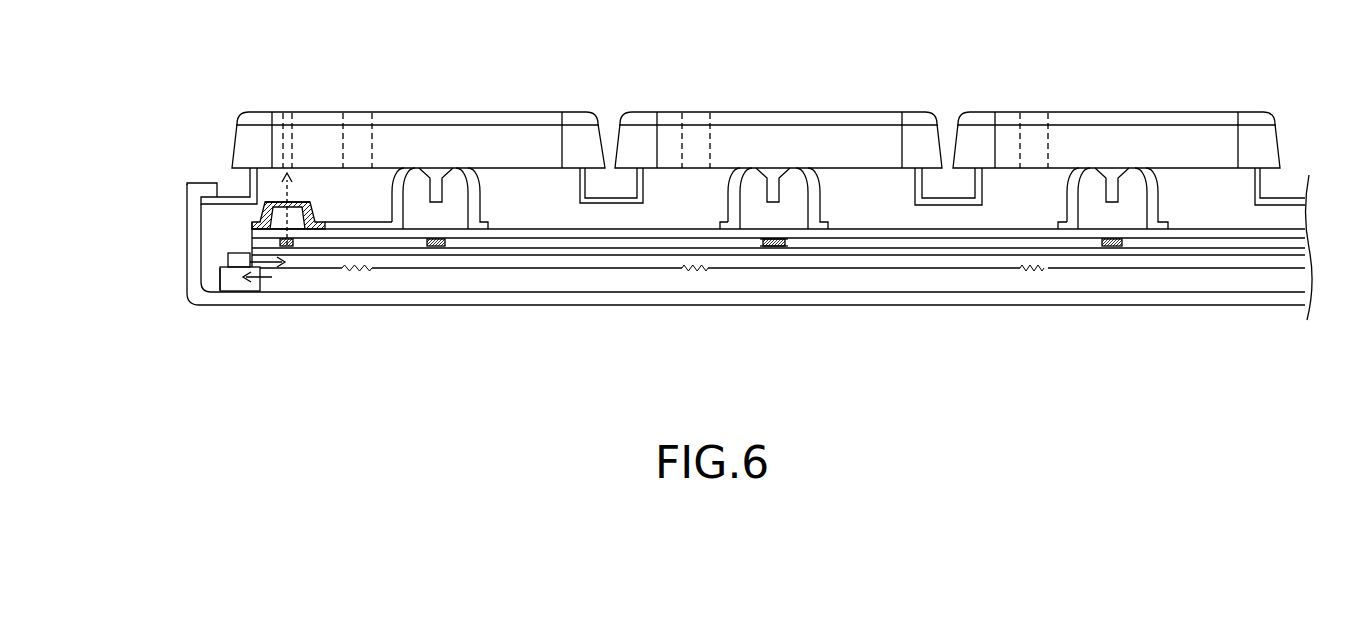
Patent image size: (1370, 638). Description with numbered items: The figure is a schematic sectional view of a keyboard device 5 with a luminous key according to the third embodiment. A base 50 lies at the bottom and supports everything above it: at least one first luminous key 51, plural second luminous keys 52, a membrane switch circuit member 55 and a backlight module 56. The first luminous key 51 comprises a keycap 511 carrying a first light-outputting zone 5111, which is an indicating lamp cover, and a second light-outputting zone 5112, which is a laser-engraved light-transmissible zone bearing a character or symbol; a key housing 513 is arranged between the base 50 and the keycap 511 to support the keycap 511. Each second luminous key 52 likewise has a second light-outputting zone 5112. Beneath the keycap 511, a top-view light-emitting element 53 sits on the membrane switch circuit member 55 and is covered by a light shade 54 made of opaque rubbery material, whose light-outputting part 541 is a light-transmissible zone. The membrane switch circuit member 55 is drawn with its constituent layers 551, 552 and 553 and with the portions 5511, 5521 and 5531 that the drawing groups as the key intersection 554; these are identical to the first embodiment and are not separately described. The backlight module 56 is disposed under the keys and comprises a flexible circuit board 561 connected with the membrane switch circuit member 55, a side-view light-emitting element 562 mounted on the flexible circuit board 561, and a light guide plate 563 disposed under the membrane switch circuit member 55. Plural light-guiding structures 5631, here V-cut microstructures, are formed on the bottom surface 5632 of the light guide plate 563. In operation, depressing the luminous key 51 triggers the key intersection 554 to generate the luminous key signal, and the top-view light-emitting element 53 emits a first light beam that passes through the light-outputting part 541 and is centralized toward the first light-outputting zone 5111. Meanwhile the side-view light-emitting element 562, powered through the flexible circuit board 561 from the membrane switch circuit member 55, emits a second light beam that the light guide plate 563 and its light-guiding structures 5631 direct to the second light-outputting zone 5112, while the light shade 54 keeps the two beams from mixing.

The keyboard device 5 is at (1116, 30).
The base 50 is at (916, 295).
The first luminous key 51 is at (473, 104).
The keycap 511 is at (548, 112).
The first light-outputting zone 5111 is at (287, 111).
The second light-outputting zone 5112 is at (361, 117).
The second luminous key 52 is at (819, 106).
The top-view light-emitting element 53 is at (349, 269).
The light shade 54 is at (310, 213).
The light-outputting part 541 is at (287, 200).
The membrane switch circuit member 55 is at (1217, 238).
The upper membrane layer 551 is at (918, 235).
The upper contact 5511 is at (788, 243).
The spacer layer 552 is at (965, 244).
The spacer opening 5521 is at (762, 242).
The lower membrane layer 553 is at (942, 250).
The lower contact 5531 is at (760, 246).
The key intersection 554 is at (867, 352).
The backlight module 56 is at (250, 282).
The flexible circuit board 561 is at (222, 273).
The side-view light-emitting element 562 is at (229, 254).
The light guide plate 563 is at (577, 263).
The light-guiding structure 5631 is at (300, 246).
The bottom surface 5632 is at (640, 268).
The key housing 513 is at (233, 198).